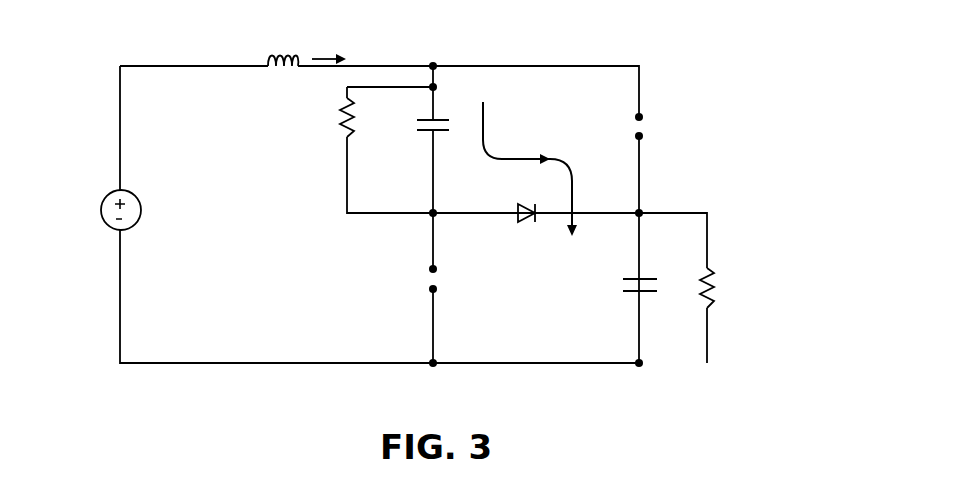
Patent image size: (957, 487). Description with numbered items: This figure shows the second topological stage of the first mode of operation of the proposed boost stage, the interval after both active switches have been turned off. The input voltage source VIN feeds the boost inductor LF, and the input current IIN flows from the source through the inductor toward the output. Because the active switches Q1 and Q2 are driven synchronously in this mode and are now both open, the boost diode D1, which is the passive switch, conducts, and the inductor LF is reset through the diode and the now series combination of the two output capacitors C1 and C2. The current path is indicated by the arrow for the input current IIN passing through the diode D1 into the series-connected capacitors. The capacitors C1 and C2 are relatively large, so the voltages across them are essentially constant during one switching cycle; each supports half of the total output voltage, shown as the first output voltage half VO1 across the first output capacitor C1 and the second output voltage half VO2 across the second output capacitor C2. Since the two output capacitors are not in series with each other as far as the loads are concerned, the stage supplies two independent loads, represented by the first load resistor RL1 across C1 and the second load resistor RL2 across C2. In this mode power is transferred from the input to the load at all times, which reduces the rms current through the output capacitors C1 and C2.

The input voltage source VIN is at (95, 210).
The boost inductor LF is at (283, 45).
The input current IIN is at (444, 130).
The first load resistor RL1 is at (325, 119).
The first output voltage half VO1 is at (245, 122).
The first output capacitor C1 is at (417, 125).
The first active switch Q1 is at (416, 283).
The second active switch Q2 is at (619, 129).
The boost diode D1 is at (525, 196).
The second output capacitor C2 is at (623, 290).
The second load resistor RL2 is at (730, 290).
The second output voltage half VO2 is at (806, 295).